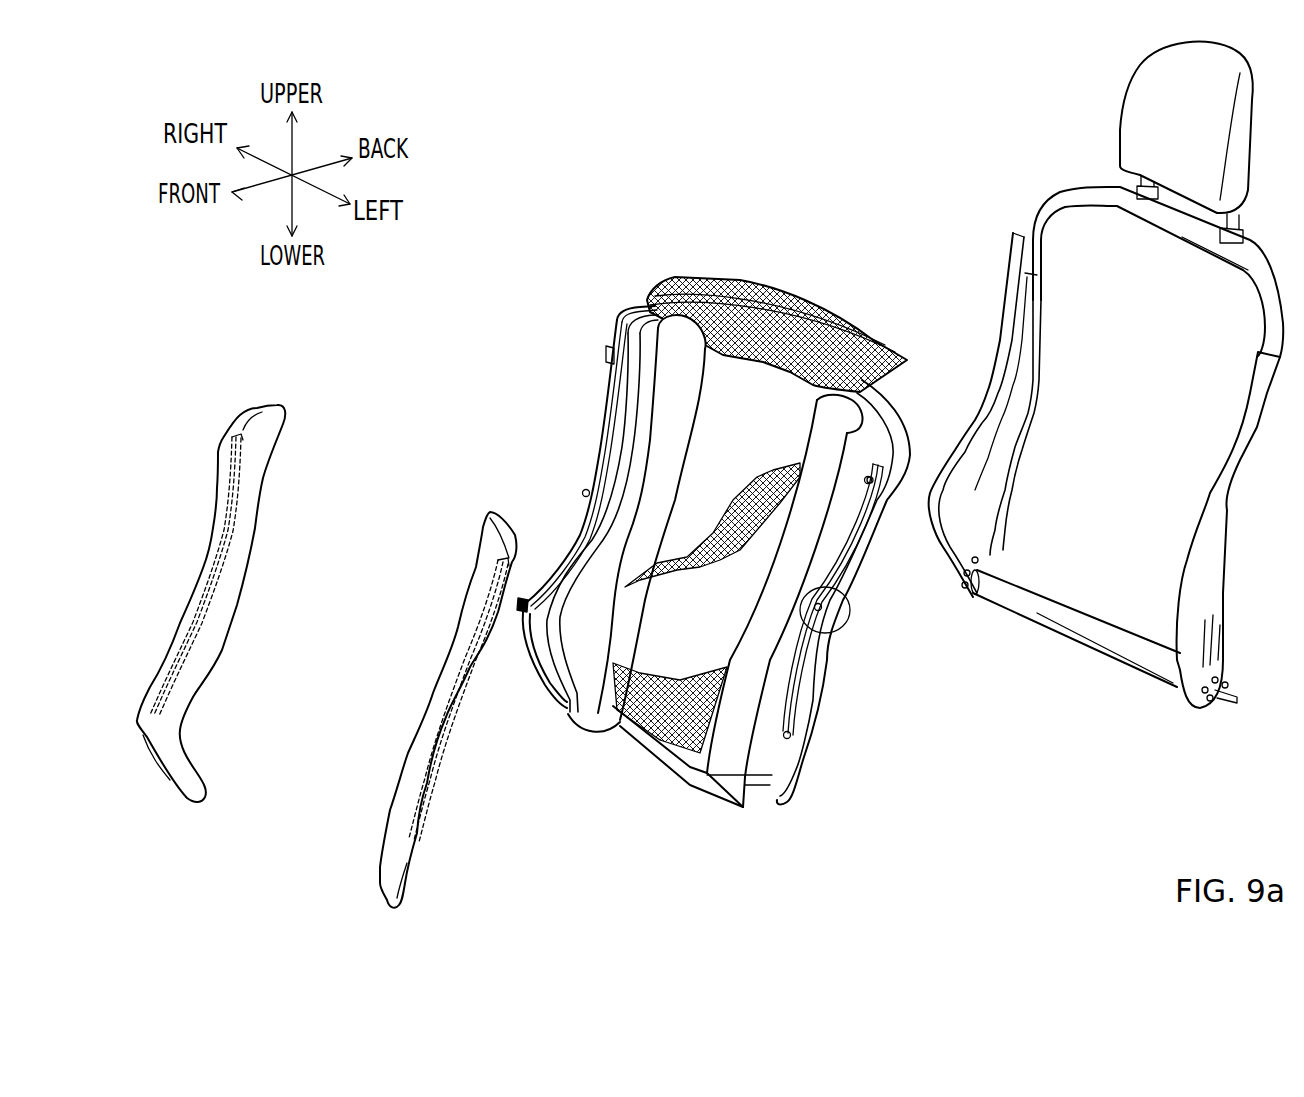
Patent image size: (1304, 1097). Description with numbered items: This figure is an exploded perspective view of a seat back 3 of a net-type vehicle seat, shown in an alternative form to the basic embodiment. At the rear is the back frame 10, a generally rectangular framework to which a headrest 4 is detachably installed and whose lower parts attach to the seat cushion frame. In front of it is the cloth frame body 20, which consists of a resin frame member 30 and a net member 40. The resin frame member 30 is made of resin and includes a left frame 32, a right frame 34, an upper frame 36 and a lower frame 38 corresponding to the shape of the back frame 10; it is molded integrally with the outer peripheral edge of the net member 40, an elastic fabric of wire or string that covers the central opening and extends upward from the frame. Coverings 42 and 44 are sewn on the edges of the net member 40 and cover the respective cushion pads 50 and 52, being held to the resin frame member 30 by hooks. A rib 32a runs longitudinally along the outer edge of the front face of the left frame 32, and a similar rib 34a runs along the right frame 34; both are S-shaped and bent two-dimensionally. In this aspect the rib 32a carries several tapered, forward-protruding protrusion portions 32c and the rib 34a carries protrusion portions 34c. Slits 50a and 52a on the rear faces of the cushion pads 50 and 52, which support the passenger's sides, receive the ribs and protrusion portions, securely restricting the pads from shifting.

The seat back 3 is at (748, 167).
The headrest 4 is at (1163, 80).
The back frame 10 is at (1045, 173).
The cloth frame body 20 is at (627, 296).
The resin frame member 30 is at (730, 556).
The left frame 32 is at (738, 558).
The rib 32a is at (872, 478).
The protrusion portions 32c is at (812, 610).
The right frame 34 is at (710, 509).
The rib 34a is at (600, 450).
The protrusion portions 34c is at (545, 481).
The upper frame 36 is at (718, 624).
The lower frame 38 is at (680, 757).
The net member 40 is at (653, 700).
The covering 42 is at (822, 447).
The covering 44 is at (675, 383).
The cushion pad 50 is at (448, 710).
The slit 50a is at (455, 710).
The cushion pad 52 is at (237, 603).
The slit 52a is at (238, 538).